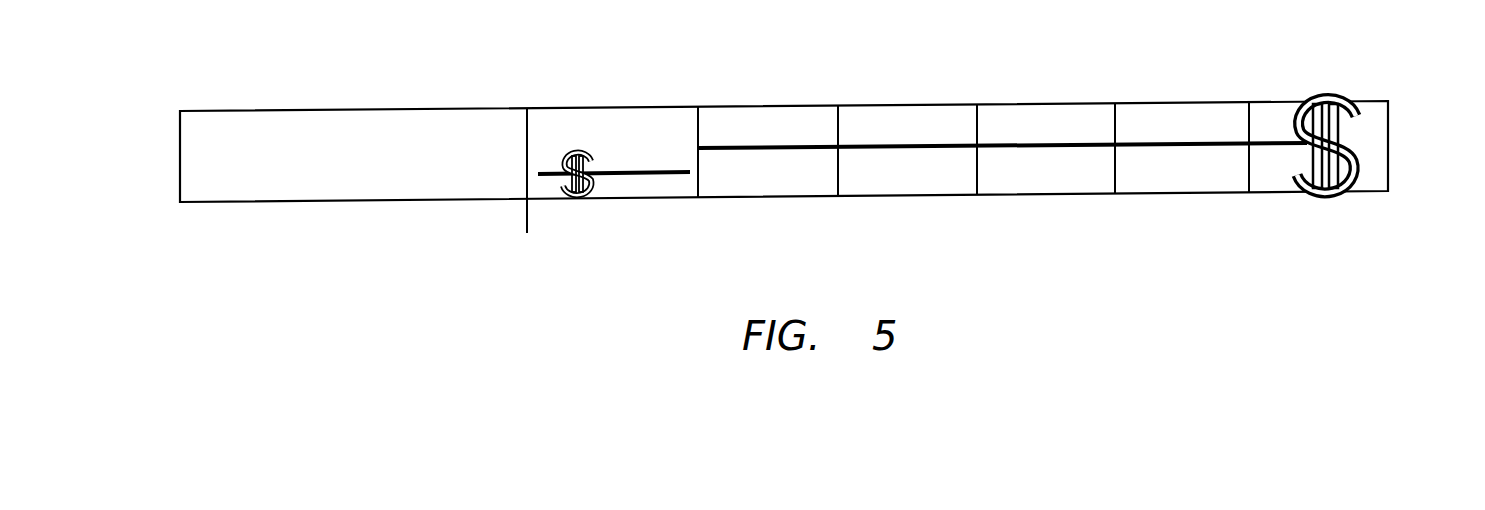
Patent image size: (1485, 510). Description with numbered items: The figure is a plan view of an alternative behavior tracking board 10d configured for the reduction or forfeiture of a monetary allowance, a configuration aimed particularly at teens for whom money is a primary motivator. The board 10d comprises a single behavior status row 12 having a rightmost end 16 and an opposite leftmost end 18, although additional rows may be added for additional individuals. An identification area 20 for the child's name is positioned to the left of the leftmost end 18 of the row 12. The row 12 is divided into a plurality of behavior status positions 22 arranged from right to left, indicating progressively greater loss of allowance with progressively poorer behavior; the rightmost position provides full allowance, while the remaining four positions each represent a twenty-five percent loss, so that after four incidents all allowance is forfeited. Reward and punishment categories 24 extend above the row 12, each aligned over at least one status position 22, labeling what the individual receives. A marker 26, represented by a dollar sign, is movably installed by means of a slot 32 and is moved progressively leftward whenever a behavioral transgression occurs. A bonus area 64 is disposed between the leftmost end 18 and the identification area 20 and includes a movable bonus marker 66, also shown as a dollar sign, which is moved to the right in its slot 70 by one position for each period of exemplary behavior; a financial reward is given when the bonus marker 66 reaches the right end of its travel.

The behavior tracking board 10d is at (433, 338).
The behavior status row 12 is at (1000, 120).
The rightmost end 16 is at (1373, 128).
The leftmost end 18 is at (698, 107).
The identification area 20 is at (363, 130).
The behavior status positions 22 is at (1065, 168).
The reward and punishment categories 24 is at (940, 165).
The marker 26 is at (1327, 190).
The slot 32 is at (1025, 148).
The bonus area 64 is at (583, 120).
The bonus marker 66 is at (531, 188).
The slot 70 is at (640, 175).